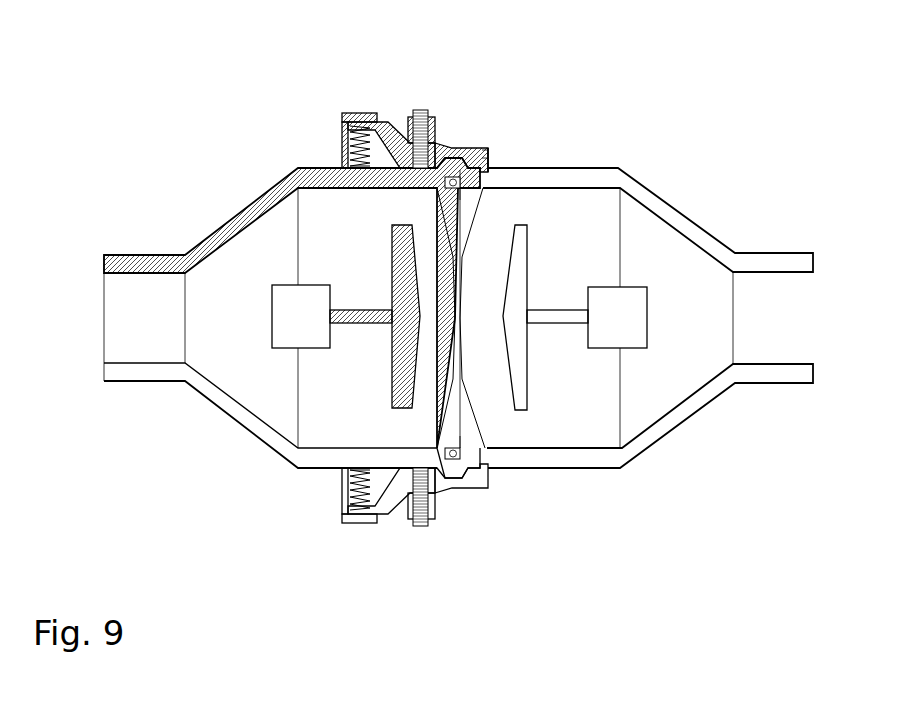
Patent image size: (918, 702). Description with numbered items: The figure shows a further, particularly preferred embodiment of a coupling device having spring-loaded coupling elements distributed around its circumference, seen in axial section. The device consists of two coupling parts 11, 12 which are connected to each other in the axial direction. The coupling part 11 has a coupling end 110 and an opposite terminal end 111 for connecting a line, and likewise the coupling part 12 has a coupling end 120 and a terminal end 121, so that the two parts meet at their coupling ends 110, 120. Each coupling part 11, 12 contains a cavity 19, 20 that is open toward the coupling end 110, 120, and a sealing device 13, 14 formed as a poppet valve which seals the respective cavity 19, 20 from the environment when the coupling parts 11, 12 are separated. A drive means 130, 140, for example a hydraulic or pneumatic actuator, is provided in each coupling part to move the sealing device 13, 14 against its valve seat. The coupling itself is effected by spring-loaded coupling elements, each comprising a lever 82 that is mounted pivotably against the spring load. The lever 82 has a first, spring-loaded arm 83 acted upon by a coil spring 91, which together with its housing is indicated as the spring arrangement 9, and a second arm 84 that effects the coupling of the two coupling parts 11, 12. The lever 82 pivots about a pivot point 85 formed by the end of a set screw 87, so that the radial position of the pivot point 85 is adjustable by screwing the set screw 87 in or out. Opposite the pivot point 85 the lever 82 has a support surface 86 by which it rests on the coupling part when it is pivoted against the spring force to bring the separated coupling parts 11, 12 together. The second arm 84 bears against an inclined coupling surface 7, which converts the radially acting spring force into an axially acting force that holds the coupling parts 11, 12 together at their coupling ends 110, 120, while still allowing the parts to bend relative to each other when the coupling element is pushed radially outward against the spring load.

The coupling surface 7 is at (491, 158).
The spring arrangement 9 is at (342, 143).
The coil spring 91 is at (360, 318).
The coupling part 11 is at (228, 218).
The coupling part 12 is at (673, 215).
The sealing device 13 is at (397, 391).
The sealing device 14 is at (527, 405).
The cavity 19 is at (268, 388).
The cavity 20 is at (667, 373).
The lever 82 is at (490, 160).
The first arm 83 is at (395, 130).
The second arm 84 is at (476, 148).
The pivot point 85 is at (423, 130).
The support surface 86 is at (432, 190).
The set screw 87 is at (418, 110).
The coupling end 110 is at (376, 527).
The terminal end 111 is at (150, 418).
The coupling end 120 is at (505, 482).
The terminal end 121 is at (755, 216).
The drive means 130 is at (322, 350).
The drive means 140 is at (627, 350).